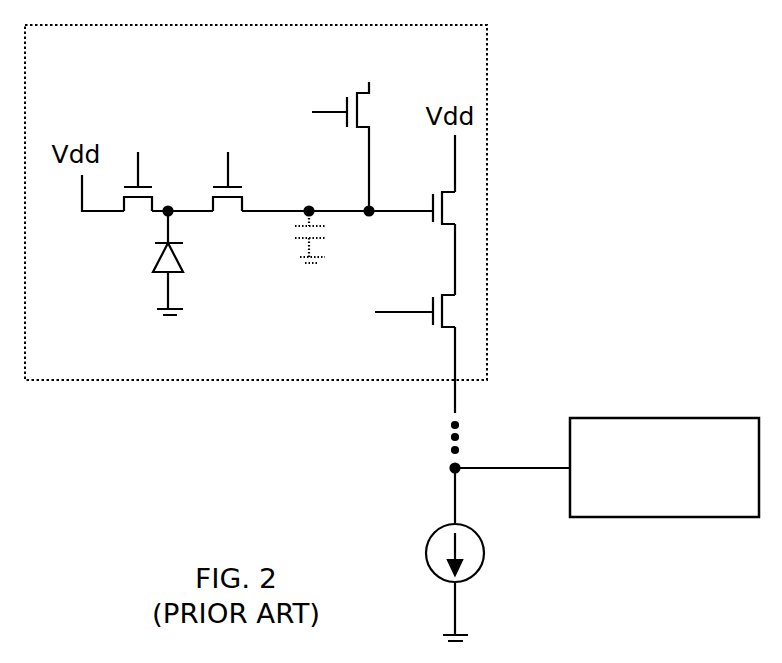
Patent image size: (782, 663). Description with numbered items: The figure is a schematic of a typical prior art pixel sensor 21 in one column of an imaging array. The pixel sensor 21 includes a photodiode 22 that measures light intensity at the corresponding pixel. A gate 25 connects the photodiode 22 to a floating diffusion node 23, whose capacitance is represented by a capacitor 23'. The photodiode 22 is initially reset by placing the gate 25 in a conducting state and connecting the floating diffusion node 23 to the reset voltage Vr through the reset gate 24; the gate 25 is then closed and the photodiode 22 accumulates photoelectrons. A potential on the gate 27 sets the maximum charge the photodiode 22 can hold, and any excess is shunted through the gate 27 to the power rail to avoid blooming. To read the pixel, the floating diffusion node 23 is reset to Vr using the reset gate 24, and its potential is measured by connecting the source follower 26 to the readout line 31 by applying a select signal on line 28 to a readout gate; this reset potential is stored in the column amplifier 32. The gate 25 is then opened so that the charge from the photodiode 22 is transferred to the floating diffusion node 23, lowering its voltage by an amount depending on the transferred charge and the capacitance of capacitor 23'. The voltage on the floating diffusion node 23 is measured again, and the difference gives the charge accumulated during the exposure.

The pixel sensor 21 is at (178, 381).
The photodiode 22 is at (180, 253).
The floating diffusion node 23 is at (337, 183).
The capacitor 23' is at (339, 237).
The reset gate 24 is at (362, 113).
The gate 25 is at (225, 203).
The source follower 26 is at (448, 187).
The gate 27 is at (128, 216).
The line 28 is at (387, 315).
The readout line 31 is at (456, 498).
The column amplifier 32 is at (683, 415).